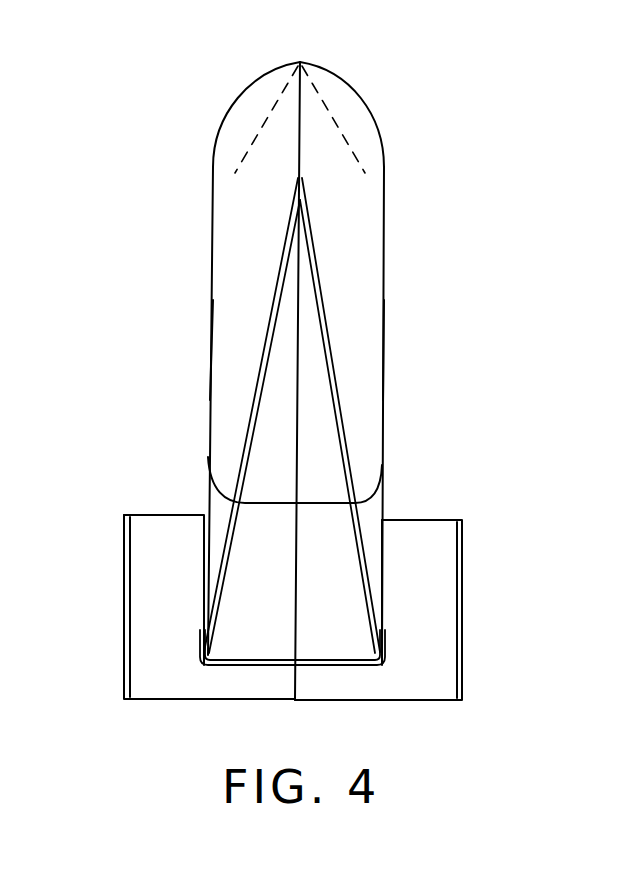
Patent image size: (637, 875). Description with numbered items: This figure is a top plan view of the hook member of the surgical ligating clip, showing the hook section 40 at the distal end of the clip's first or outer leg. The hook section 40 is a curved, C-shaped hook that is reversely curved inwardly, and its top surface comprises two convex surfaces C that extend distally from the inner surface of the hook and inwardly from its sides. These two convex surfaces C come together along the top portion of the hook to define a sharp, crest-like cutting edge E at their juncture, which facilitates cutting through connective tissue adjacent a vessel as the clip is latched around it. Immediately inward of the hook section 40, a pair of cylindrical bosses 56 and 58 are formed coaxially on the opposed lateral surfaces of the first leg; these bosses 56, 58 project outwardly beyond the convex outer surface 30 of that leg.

The hook section 40 is at (439, 135).
The cutting edge E is at (300, 143).
The convex surfaces C is at (228, 335).
The convex outer surface 30 is at (322, 633).
The cylindrical boss 56 is at (124, 661).
The cylindrical boss 58 is at (462, 670).